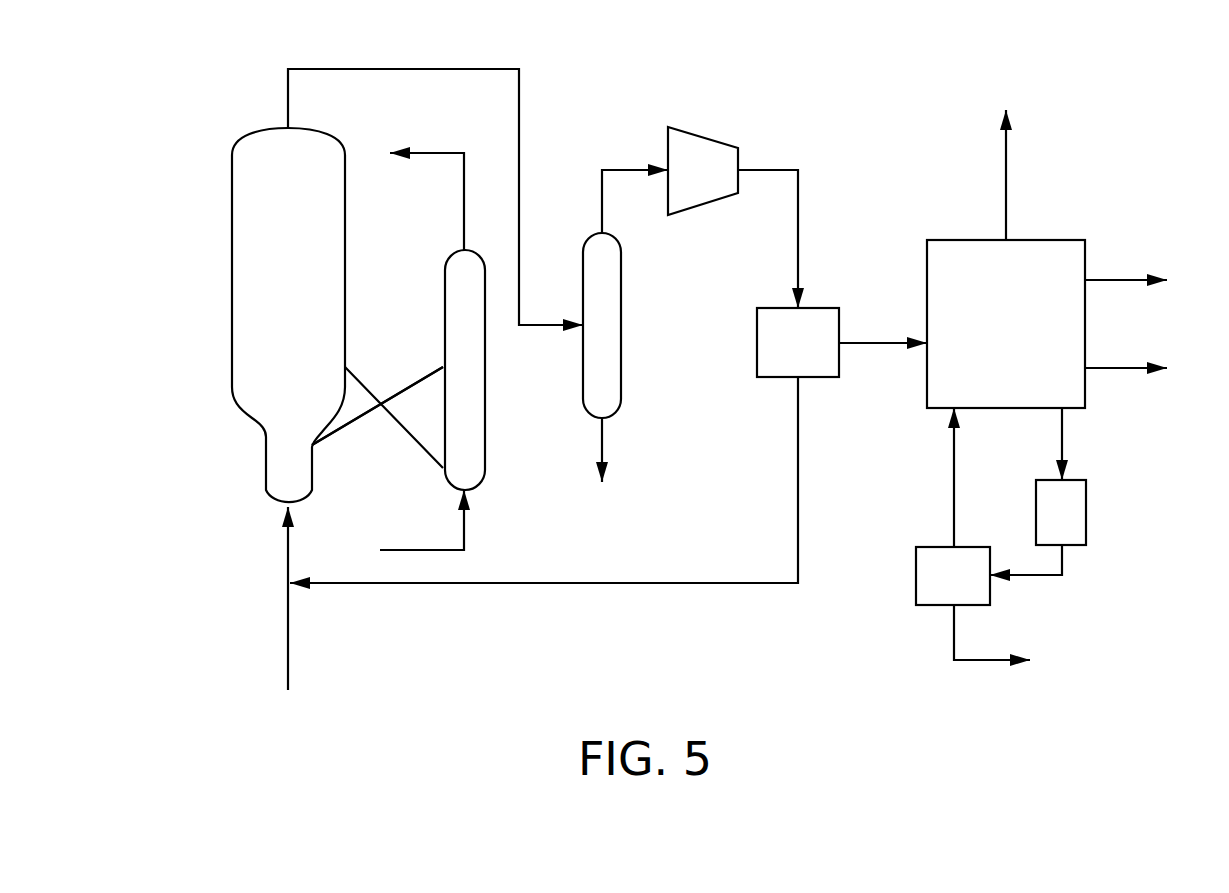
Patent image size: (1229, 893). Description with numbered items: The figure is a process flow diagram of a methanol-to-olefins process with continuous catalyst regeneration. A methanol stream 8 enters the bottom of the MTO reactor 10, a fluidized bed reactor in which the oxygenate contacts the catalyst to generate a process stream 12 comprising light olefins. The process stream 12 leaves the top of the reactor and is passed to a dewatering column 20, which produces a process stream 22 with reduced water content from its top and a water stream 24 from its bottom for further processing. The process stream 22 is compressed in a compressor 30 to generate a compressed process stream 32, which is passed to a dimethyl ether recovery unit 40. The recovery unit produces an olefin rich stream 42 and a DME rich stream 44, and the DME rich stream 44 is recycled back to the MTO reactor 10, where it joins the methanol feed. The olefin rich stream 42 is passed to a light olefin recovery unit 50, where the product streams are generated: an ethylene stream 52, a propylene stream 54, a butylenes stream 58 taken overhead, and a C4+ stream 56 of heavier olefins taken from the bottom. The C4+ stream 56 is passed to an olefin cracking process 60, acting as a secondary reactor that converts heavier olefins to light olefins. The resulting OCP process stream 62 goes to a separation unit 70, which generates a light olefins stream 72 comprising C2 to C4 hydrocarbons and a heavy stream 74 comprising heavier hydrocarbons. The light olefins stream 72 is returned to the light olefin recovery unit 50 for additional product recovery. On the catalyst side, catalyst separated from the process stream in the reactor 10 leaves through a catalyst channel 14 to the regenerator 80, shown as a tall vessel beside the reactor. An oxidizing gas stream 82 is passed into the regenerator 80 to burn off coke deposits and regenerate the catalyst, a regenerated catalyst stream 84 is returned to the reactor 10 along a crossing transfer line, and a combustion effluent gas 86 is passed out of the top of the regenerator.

The methanol stream 8 is at (288, 645).
The MTO reactor 10 is at (232, 200).
The process stream 12 is at (405, 68).
The catalyst channel 14 is at (365, 382).
The dewatering column 20 is at (621, 278).
The process stream 22 is at (623, 167).
The water stream 24 is at (604, 441).
The compressor 30 is at (705, 132).
The compressed process stream 32 is at (800, 233).
The dimethyl ether recovery unit 40 is at (757, 343).
The olefin rich stream 42 is at (872, 340).
The DME rich stream 44 is at (798, 510).
The light olefin recovery unit 50 is at (968, 238).
The ethylene stream 52 is at (1102, 363).
The propylene stream 54 is at (1102, 275).
The C4+ stream 56 is at (1064, 433).
The butylenes stream 58 is at (1008, 168).
The olefin cracking process 60 is at (1088, 510).
The OCP process stream 62 is at (1064, 566).
The separation unit 70 is at (916, 574).
The light olefins stream 72 is at (953, 477).
The heavy stream 74 is at (952, 650).
The regenerator 80 is at (487, 463).
The oxidizing gas stream 82 is at (425, 548).
The regenerated catalyst stream 84 is at (420, 375).
The combustion effluent gas 86 is at (464, 200).